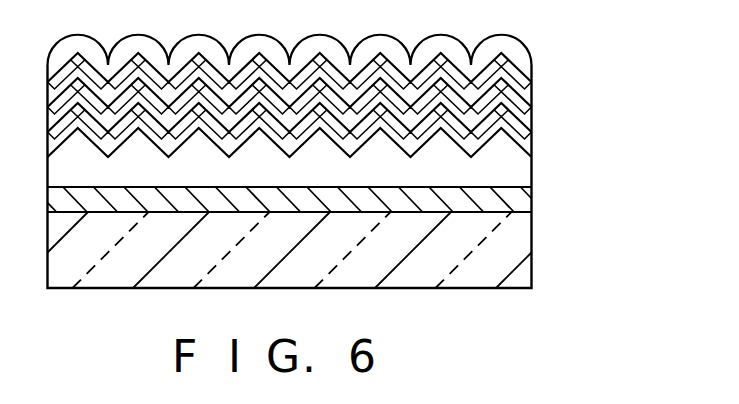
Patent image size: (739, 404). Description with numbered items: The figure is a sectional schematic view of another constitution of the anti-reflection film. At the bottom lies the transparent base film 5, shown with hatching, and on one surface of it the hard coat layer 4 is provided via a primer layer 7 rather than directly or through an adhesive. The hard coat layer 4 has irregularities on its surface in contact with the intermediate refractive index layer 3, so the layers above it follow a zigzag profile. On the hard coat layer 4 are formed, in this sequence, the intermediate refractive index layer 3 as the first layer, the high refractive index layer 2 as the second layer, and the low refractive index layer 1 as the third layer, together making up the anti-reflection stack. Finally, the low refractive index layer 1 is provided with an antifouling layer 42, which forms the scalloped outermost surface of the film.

The antifouling layer 42 is at (523, 63).
The low refractive index layer 1 is at (520, 87).
The high refractive index layer 2 is at (520, 115).
The intermediate refractive index layer 3 is at (520, 135).
The hard coat layer 4 is at (520, 170).
The primer layer 7 is at (520, 202).
The transparent base film 5 is at (520, 247).